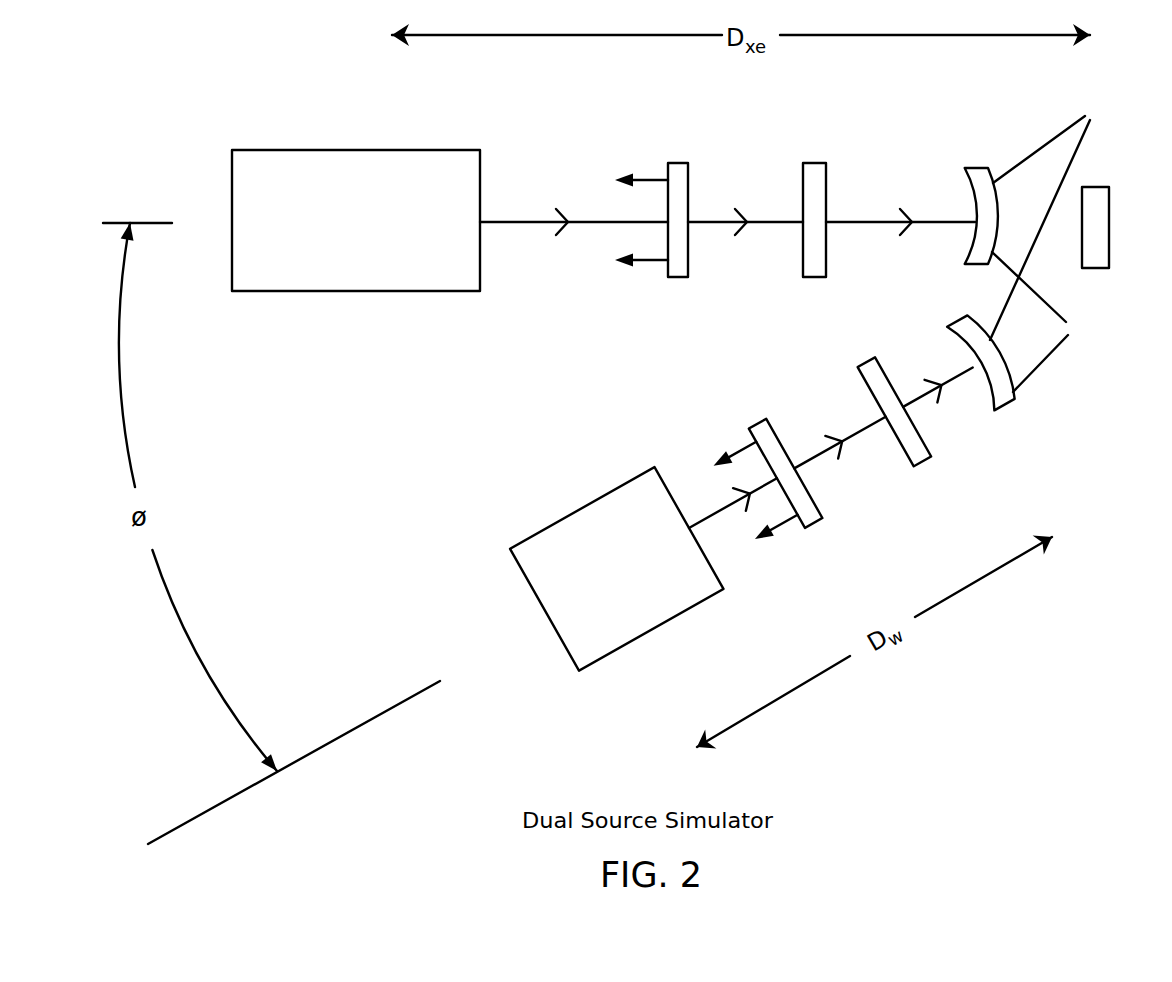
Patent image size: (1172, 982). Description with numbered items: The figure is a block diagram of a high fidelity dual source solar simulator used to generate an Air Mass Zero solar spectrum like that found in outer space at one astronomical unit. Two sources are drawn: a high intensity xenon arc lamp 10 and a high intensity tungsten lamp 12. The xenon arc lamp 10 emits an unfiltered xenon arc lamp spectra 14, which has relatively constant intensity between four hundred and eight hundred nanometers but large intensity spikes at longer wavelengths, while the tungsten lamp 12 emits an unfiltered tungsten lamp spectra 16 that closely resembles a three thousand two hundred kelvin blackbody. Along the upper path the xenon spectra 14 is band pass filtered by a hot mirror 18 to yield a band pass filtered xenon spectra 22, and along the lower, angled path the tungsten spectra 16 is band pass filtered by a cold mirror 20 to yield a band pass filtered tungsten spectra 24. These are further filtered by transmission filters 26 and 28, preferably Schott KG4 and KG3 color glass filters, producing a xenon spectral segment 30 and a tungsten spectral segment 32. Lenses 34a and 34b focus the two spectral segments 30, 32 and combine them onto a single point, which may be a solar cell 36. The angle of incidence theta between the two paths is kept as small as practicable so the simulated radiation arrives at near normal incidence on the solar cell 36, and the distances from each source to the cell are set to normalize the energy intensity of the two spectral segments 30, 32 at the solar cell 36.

The xenon arc lamp 10 is at (338, 291).
The tungsten lamp 12 is at (560, 522).
The unfiltered xenon arc lamp spectra 14 is at (500, 223).
The unfiltered tungsten lamp spectra 16 is at (715, 513).
The hot mirror 18 is at (681, 163).
The cold mirror 20 is at (810, 525).
The band pass filtered xenon spectra 22 is at (704, 223).
The band pass filtered tungsten spectra 24 is at (818, 452).
The transmission filter 26 is at (815, 163).
The transmission filter 28 is at (913, 467).
The xenon spectral segment 30 is at (842, 223).
The tungsten spectral segment 32 is at (920, 395).
The lens 34a is at (967, 167).
The lens 34b is at (1000, 413).
The solar cell 36 is at (1096, 187).